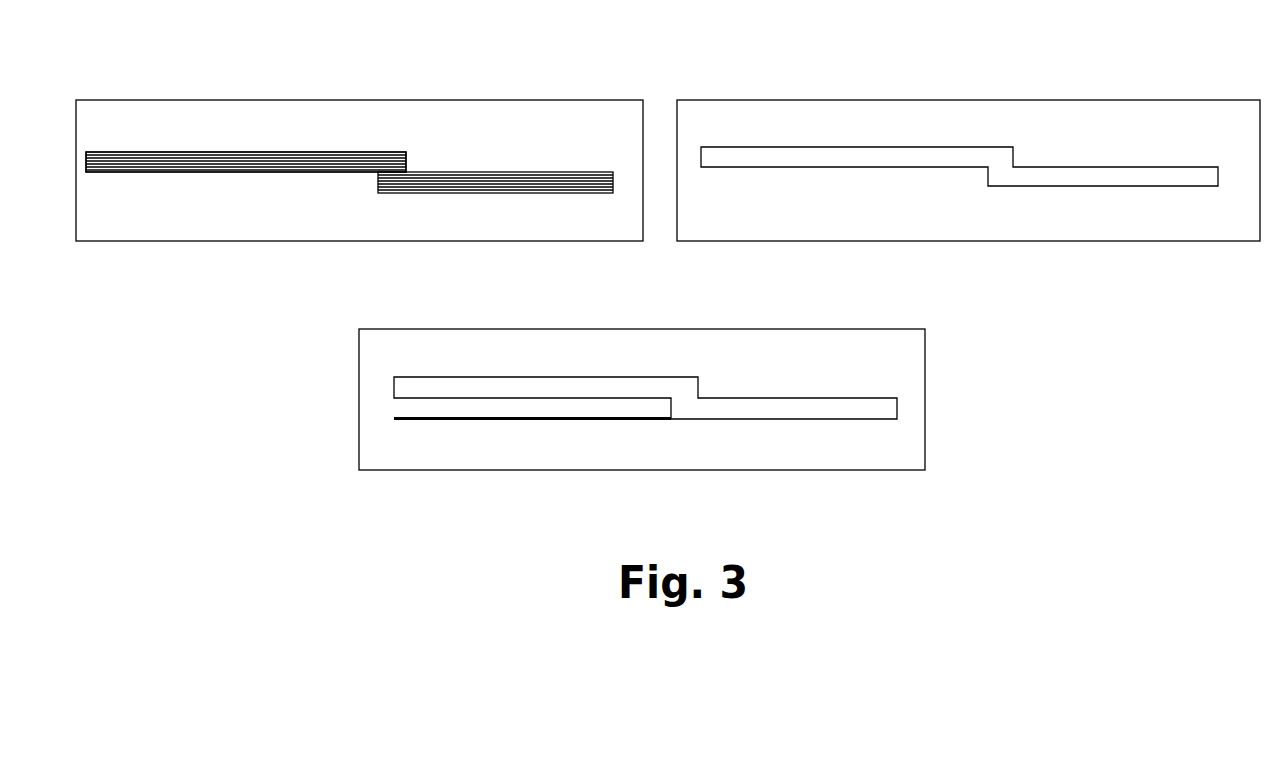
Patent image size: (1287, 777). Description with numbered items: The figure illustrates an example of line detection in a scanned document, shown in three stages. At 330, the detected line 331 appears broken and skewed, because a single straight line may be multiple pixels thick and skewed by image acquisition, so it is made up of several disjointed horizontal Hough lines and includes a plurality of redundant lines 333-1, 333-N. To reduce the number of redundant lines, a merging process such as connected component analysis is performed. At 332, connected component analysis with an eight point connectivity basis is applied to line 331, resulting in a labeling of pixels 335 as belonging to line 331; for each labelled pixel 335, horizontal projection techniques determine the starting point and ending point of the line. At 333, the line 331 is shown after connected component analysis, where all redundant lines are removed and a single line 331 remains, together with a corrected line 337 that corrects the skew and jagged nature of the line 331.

The broken and skewed line illustration 330 is at (131, 99).
The line 331 is at (539, 172).
The connected component analysis illustration 332 is at (774, 99).
The post connected component analysis illustration 333 is at (817, 470).
The redundant line 333-1 is at (224, 152).
The redundant line 333-N is at (282, 152).
The labelled pixels 335 is at (943, 126).
The corrected line 337 is at (475, 421).